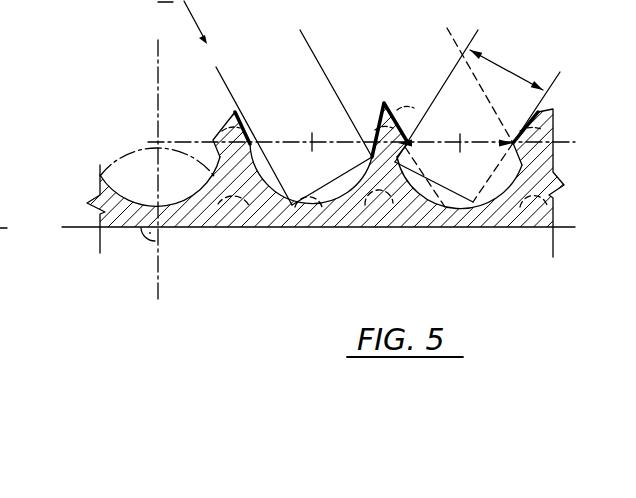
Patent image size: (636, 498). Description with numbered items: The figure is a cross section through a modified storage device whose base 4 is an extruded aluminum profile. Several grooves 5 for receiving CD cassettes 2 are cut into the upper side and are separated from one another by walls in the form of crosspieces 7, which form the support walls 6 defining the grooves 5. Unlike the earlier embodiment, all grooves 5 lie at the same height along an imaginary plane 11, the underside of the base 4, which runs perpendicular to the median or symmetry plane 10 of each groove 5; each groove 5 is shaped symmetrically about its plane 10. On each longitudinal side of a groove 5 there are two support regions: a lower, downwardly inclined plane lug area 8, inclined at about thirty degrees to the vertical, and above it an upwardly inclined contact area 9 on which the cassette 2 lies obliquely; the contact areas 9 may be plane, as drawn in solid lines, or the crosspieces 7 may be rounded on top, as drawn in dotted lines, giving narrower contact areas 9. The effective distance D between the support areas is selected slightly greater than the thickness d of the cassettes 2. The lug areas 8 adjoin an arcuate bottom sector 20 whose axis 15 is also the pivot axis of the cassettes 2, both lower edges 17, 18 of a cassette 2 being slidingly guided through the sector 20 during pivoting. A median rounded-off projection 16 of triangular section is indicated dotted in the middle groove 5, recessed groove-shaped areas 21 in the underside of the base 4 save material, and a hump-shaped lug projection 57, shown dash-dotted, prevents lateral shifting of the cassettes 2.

The CD cassette 2 is at (315, 48).
The base 4 is at (558, 176).
The groove 5 is at (135, 121).
The support wall 6 is at (222, 118).
The crosspiece 7 is at (383, 152).
The lug area 8 is at (365, 155).
The contact area 9 is at (370, 128).
The median plane 10 is at (155, 253).
The imaginary plane 11 is at (80, 228).
The axis 15 is at (461, 141).
The projection 16 is at (313, 210).
The lower edge 17 is at (454, 203).
The lower edge 18 is at (467, 203).
The bottom sector 20 is at (505, 200).
The recessed groove-shaped area 21 is at (233, 207).
The lug projection 57 is at (120, 157).
The thickness of the cassettes d is at (497, 61).
The effective distance D is at (486, 146).